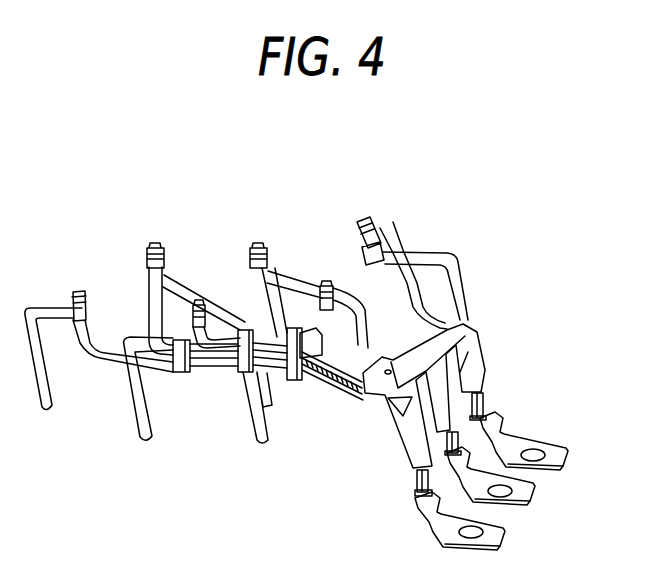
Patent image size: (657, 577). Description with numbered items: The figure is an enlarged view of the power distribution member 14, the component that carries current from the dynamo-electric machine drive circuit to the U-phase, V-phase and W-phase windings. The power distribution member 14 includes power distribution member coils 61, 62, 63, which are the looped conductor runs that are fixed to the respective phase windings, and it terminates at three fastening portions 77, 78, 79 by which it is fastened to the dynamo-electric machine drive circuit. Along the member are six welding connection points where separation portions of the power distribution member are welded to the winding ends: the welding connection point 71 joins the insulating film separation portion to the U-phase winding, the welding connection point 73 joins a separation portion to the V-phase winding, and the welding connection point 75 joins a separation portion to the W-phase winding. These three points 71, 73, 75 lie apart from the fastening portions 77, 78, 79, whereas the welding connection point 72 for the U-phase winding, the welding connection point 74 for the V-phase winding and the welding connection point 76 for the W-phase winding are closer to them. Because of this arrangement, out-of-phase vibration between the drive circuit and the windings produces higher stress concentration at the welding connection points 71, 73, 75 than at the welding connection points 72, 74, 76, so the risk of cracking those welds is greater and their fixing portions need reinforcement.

The power distribution member 14 is at (515, 342).
The power distribution member coil 61 is at (400, 250).
The power distribution member coil 62 is at (270, 305).
The power distribution member coil 63 is at (150, 300).
The welding connection point 71 is at (152, 244).
The welding connection point 72 is at (325, 284).
The welding connection point 73 is at (258, 245).
The welding connection point 74 is at (78, 293).
The welding connection point 75 is at (361, 218).
The welding connection point 76 is at (200, 302).
The fastening portion 77 is at (548, 458).
The fastening portion 78 is at (518, 497).
The fastening portion 79 is at (490, 536).